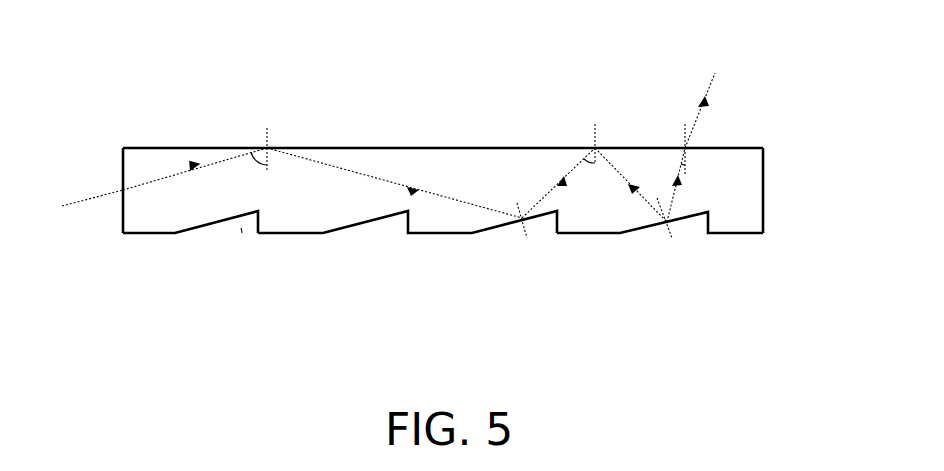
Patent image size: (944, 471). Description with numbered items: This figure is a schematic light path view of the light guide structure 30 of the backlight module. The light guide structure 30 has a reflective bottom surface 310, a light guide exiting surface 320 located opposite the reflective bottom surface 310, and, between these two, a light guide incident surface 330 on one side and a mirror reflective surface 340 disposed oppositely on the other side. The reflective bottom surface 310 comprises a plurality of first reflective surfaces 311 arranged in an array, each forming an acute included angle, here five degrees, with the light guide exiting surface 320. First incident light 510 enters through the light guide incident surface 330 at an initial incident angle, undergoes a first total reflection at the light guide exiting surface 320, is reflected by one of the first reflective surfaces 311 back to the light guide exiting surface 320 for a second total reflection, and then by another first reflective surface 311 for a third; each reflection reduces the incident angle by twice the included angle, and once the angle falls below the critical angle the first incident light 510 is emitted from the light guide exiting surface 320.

The light guide structure 30 is at (143, 73).
The reflective bottom surface 310 is at (500, 303).
The first reflective surfaces 311 is at (372, 223).
The light guide exiting surface 320 is at (452, 147).
The light guide incident surface 330 is at (123, 155).
The mirror reflective surface 340 is at (766, 183).
The first incident light 510 is at (92, 199).